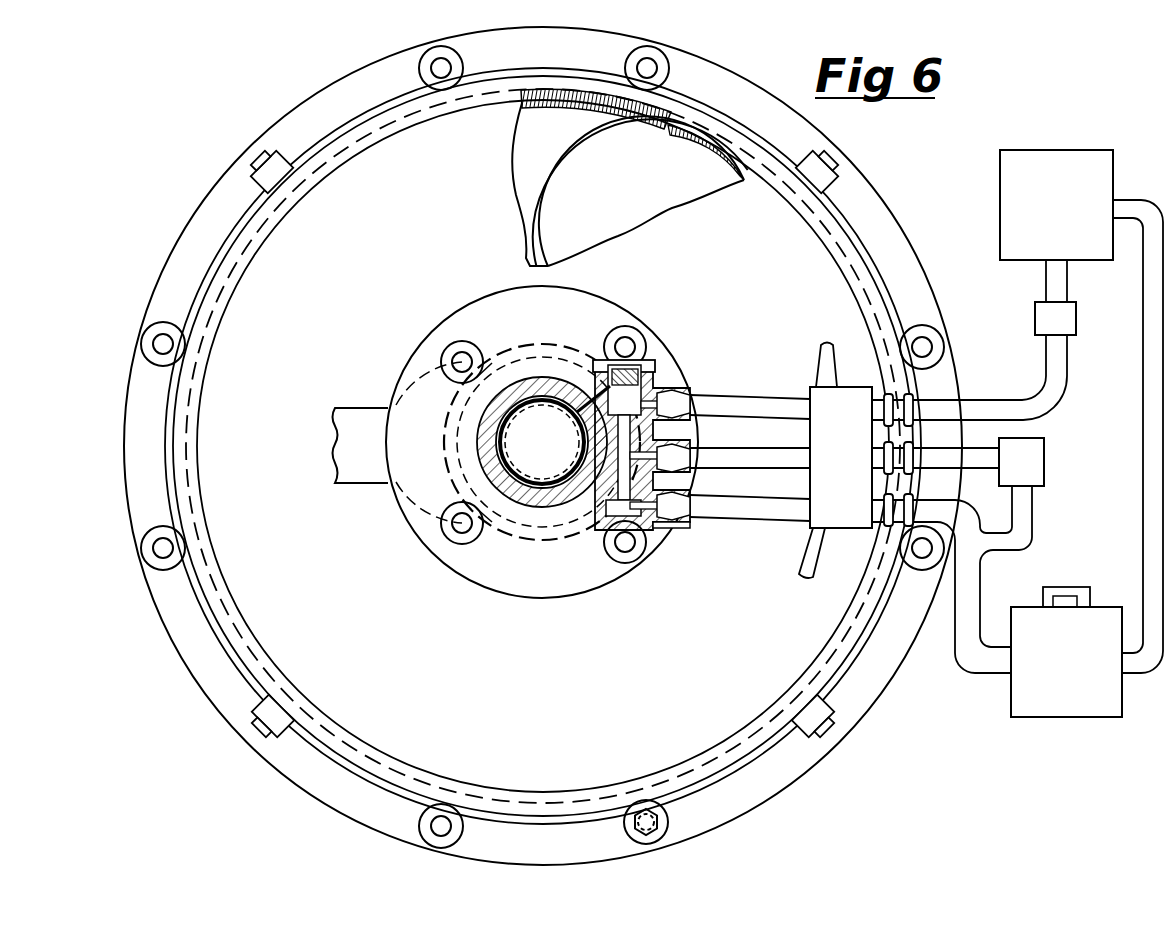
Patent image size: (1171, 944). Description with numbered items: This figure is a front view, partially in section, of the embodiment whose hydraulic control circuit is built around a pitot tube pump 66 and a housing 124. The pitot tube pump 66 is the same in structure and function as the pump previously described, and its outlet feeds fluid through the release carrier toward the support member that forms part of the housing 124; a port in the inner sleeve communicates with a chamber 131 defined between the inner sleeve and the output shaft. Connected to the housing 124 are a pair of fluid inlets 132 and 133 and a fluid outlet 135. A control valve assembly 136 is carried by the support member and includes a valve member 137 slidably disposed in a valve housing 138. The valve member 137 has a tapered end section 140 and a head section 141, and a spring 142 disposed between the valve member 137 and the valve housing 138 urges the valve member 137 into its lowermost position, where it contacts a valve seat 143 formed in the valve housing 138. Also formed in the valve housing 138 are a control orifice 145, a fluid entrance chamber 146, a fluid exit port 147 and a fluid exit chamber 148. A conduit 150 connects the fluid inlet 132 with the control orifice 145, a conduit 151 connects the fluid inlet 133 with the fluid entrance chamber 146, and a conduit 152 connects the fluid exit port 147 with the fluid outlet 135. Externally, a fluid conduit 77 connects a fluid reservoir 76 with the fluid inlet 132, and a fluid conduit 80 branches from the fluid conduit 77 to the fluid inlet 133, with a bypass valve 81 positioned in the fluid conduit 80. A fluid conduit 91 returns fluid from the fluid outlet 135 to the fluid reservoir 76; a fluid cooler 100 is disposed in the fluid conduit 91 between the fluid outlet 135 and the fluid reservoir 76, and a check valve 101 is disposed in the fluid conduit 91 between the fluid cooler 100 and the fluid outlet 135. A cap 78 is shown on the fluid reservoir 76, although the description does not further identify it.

The pitot tube pump 66 is at (582, 152).
The fluid reservoir 76 is at (1053, 718).
The fluid conduit 77 is at (958, 645).
The filler cap 78 is at (1068, 588).
The fluid conduit 80 is at (985, 487).
The bypass valve 81 is at (1044, 455).
The fluid conduit 91 is at (1026, 398).
The fluid cooler 100 is at (1073, 152).
The check valve 101 is at (1034, 314).
The housing 124 is at (812, 350).
The chamber 131 is at (542, 442).
The fluid inlet 132 is at (864, 512).
The fluid inlet 133 is at (864, 460).
The fluid outlet 135 is at (864, 412).
The control valve assembly 136 is at (660, 358).
The valve member 137 is at (542, 442).
The valve housing 138 is at (692, 528).
The tapered end section 140 is at (575, 535).
The head section 141 is at (542, 442).
The spring 142 is at (612, 372).
The valve seat 143 is at (665, 518).
The control orifice 145 is at (615, 516).
The fluid entrance chamber 146 is at (690, 482).
The fluid exit port 147 is at (676, 392).
The fluid exit chamber 148 is at (690, 432).
The conduit 150 is at (768, 510).
The conduit 151 is at (768, 462).
The conduit 152 is at (764, 404).